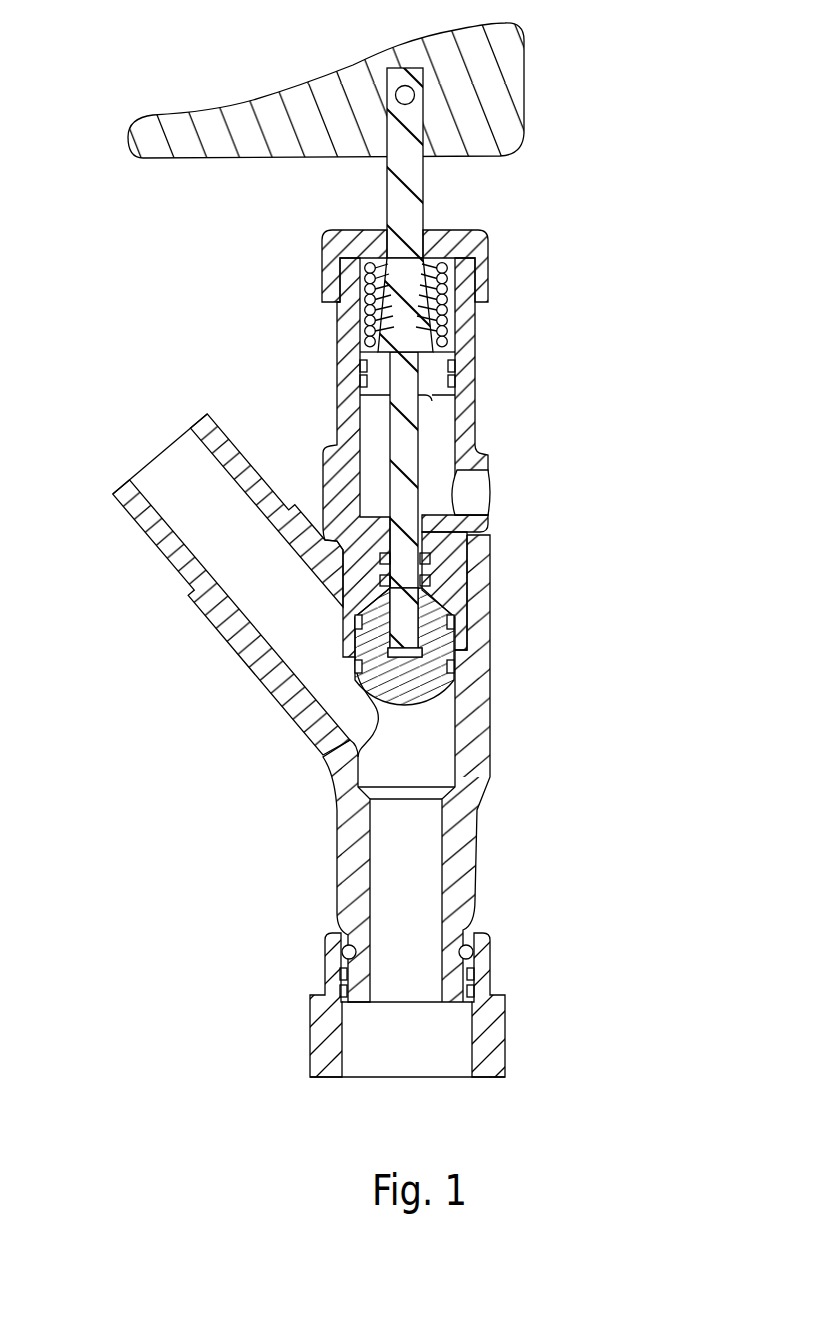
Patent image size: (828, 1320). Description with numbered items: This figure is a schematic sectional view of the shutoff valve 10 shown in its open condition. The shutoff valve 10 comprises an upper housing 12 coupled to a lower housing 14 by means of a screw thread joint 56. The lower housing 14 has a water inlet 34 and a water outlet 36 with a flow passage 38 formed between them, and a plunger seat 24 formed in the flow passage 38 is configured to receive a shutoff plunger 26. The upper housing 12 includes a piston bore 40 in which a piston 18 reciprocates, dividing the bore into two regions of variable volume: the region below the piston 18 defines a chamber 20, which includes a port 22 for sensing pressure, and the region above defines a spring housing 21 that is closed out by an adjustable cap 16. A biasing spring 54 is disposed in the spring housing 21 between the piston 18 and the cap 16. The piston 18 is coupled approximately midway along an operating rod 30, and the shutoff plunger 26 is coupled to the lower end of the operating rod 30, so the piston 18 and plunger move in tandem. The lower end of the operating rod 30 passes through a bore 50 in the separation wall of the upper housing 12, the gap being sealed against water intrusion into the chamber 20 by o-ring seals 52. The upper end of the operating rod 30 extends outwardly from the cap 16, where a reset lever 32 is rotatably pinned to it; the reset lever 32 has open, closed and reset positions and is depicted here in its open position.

The shutoff valve 10 is at (585, 440).
The upper housing 12 is at (335, 347).
The lower housing 14 is at (267, 697).
The cap 16 is at (490, 252).
The piston 18 is at (445, 373).
The chamber 20 is at (443, 418).
The spring housing 21 is at (450, 283).
The port 22 is at (490, 492).
The plunger seat 24 is at (437, 770).
The shutoff plunger 26 is at (442, 647).
The operating rod 30 is at (410, 178).
The reset lever 32 is at (380, 143).
The water inlet 34 is at (158, 450).
The water outlet 36 is at (453, 1078).
The flow passage 38 is at (432, 885).
The piston bore 40 is at (327, 285).
The bore 50 is at (488, 530).
The o-ring seals 52 is at (433, 580).
The biasing spring 54 is at (450, 320).
The screw thread joint 56 is at (490, 592).